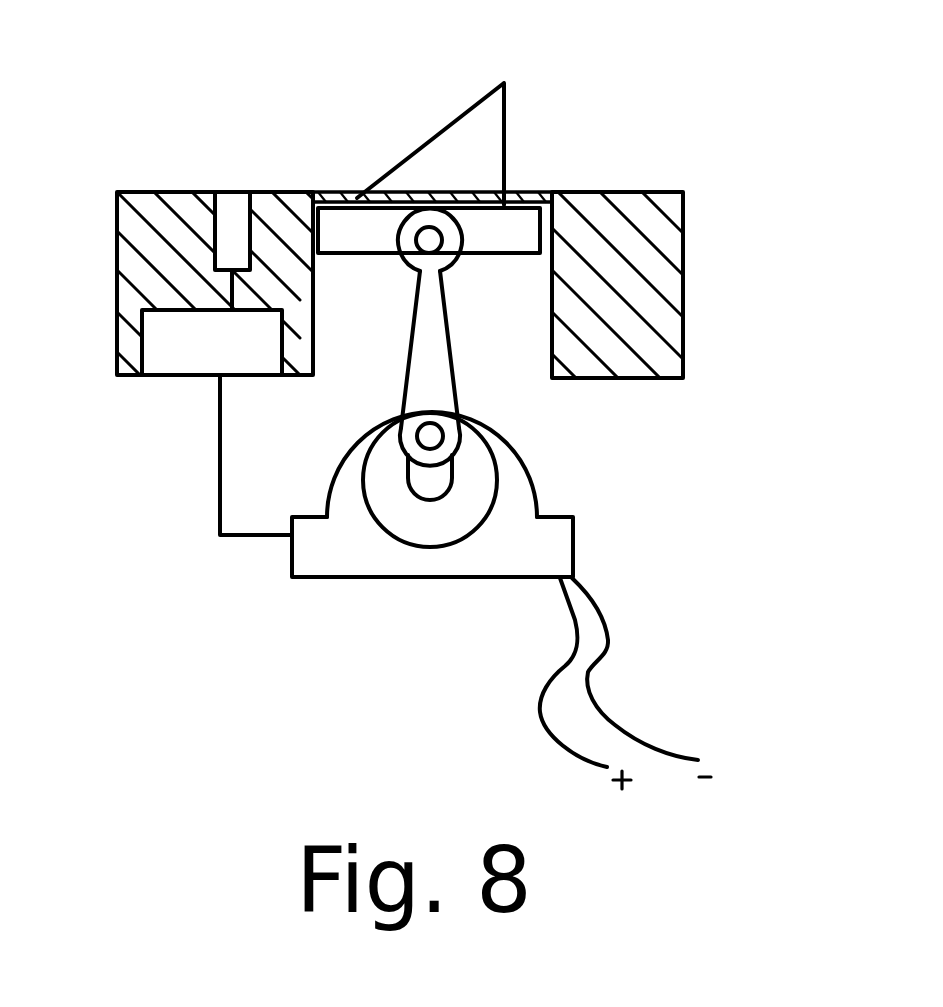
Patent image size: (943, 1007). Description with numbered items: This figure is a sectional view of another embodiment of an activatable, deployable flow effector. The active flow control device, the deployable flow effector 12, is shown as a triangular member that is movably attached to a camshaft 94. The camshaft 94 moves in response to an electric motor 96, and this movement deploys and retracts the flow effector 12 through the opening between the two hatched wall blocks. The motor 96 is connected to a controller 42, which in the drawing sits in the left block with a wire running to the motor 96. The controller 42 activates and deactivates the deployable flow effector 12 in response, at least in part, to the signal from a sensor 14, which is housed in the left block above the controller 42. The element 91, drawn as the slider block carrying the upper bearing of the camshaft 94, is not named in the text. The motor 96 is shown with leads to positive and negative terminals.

The activatable deployable flow effector 12 is at (470, 153).
The sensor 14 is at (233, 197).
The controller 42 is at (170, 357).
The slider block with bearing 91 is at (433, 240).
The camshaft 94 is at (432, 348).
The electric motor 96 is at (367, 553).